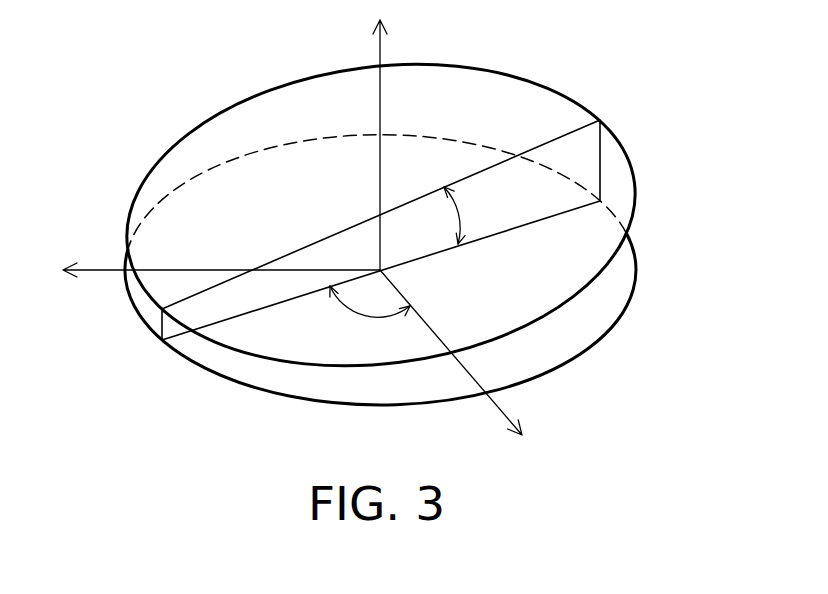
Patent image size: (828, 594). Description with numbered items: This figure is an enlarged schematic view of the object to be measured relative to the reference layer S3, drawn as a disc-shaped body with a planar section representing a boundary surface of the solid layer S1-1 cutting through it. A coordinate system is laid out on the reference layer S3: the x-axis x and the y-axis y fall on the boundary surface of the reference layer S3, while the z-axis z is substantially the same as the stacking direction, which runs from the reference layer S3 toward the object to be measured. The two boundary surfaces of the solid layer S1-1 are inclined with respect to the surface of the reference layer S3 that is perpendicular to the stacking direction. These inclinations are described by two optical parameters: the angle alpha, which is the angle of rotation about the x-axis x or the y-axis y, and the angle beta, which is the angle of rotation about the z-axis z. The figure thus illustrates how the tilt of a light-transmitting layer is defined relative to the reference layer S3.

The solid layer S1-1 is at (600, 120).
The reference layer S3 is at (632, 302).
The x-axis x is at (213, 272).
The y-axis y is at (457, 365).
The z-axis z is at (380, 135).